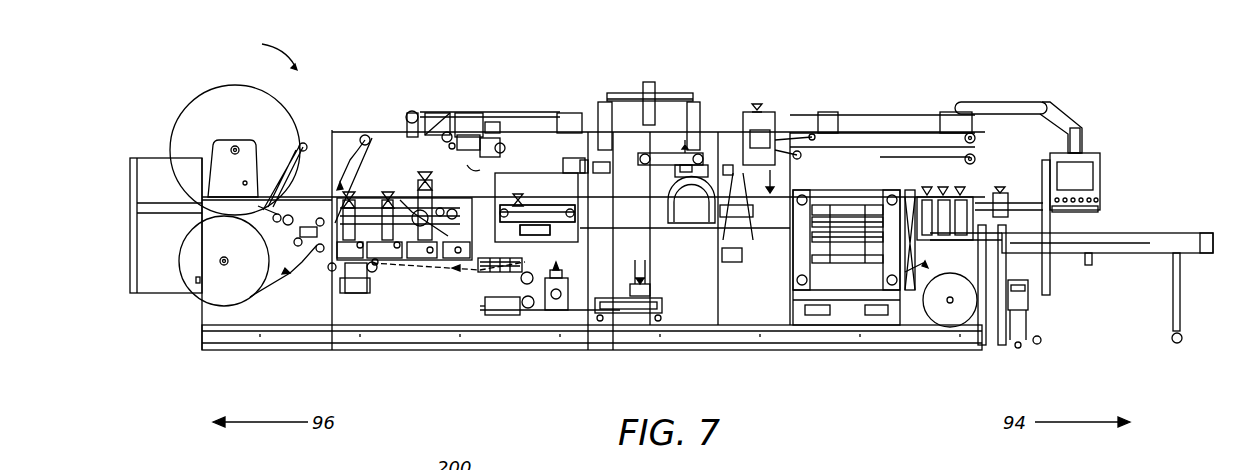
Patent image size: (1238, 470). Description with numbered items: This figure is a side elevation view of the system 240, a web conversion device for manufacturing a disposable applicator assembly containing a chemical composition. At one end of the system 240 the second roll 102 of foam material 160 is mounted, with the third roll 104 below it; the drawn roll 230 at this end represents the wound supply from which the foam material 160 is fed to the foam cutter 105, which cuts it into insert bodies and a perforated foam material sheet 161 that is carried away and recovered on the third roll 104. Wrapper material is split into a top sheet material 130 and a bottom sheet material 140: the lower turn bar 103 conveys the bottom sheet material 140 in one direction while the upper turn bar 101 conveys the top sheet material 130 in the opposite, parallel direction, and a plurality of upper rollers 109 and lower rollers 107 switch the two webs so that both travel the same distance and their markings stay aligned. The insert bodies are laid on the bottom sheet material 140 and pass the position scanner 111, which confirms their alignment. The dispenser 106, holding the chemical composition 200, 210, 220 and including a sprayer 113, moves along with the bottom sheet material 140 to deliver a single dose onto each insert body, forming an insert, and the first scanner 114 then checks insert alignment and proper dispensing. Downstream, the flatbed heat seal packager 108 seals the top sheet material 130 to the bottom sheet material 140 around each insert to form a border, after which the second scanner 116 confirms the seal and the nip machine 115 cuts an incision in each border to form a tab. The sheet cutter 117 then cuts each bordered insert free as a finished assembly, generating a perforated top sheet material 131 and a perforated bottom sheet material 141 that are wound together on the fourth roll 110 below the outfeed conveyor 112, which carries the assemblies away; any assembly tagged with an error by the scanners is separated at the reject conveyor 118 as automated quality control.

The upper turn bar 101 is at (650, 147).
The second roll 102 is at (233, 145).
The lower turn bar 103 is at (633, 313).
The third roll 104 is at (224, 266).
The foam cutter 105 is at (418, 190).
The dispenser 106 is at (577, 243).
The lower rollers 107 is at (375, 262).
The flatbed heat seal packager 108 is at (803, 300).
The upper rollers 109 is at (785, 155).
The fourth roll 110 is at (950, 305).
The position scanner 111 is at (447, 137).
The outfeed conveyor 112 is at (1092, 240).
The sprayer 113 is at (517, 210).
The first scanner 114 is at (695, 222).
The nip machine 115 is at (944, 190).
The second scanner 116 is at (913, 203).
The sheet cutter 117 is at (960, 190).
The reject conveyor 118 is at (1007, 295).
The top sheet material 130 is at (722, 155).
The perforated top sheet material 131 is at (950, 307).
The bottom sheet material 140 is at (398, 265).
The perforated bottom sheet material 141 is at (928, 284).
The foam material 160 is at (180, 148).
The perforated foam material sheet 161 is at (196, 280).
The chemical composition 200 is at (545, 180).
The chemical composition 210 is at (515, 142).
The chemical composition 220 is at (502, 157).
The supply roll 230 is at (178, 118).
The system 240 is at (257, 52).